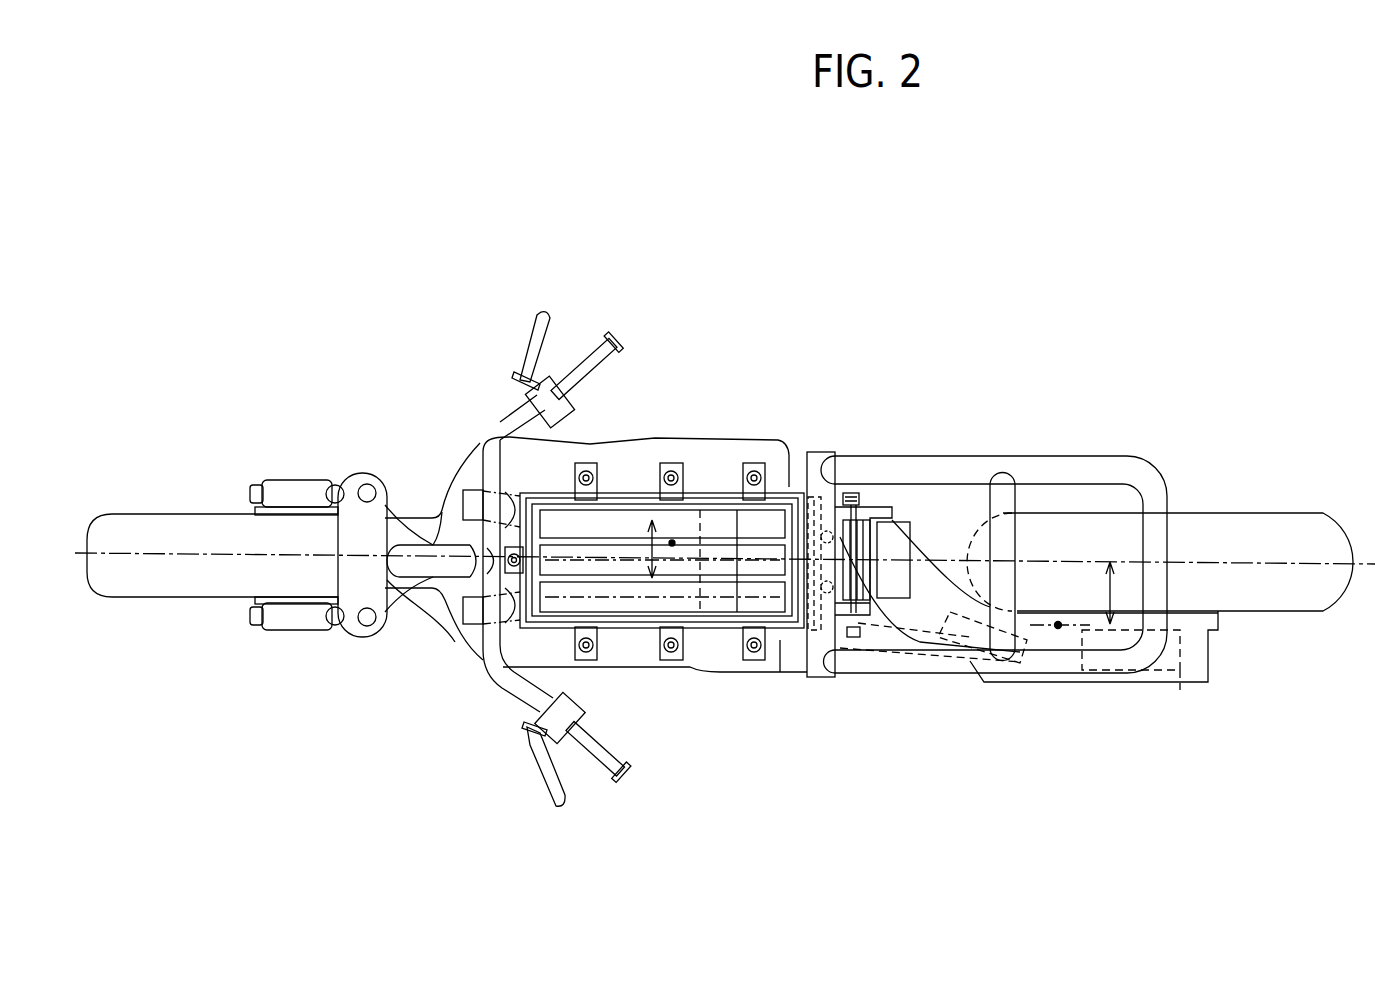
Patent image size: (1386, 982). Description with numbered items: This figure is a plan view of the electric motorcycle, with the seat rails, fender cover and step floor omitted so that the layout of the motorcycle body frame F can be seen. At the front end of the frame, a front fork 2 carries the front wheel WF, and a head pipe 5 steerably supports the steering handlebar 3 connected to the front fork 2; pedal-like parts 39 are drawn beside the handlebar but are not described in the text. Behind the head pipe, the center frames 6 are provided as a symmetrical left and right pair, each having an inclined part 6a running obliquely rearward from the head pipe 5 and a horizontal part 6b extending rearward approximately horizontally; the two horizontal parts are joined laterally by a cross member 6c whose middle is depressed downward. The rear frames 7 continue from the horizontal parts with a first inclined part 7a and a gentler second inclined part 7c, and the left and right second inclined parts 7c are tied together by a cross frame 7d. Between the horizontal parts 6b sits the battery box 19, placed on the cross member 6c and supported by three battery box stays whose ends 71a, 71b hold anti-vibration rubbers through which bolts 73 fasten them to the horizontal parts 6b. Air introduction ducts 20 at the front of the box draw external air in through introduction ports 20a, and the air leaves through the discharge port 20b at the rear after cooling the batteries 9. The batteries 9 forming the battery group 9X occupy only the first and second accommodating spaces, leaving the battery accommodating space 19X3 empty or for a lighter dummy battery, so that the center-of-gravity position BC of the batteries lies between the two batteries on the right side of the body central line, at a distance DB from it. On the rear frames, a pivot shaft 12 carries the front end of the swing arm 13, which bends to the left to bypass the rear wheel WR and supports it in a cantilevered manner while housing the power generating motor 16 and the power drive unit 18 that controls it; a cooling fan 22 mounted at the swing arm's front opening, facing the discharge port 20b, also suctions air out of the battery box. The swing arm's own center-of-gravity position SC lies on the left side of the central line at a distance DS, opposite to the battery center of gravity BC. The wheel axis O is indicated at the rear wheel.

The front wheel WF is at (187, 528).
The rear wheel WR is at (1265, 522).
The front fork 2 is at (303, 492).
The head pipe 5 is at (432, 548).
The center frame 6 is at (473, 658).
The inclined part 6a is at (450, 590).
The horizontal part 6b is at (690, 458).
The cross member 6c is at (722, 600).
The air introduction duct 20 is at (512, 520).
The introduction port 20a is at (468, 498).
The discharge port 20b is at (852, 492).
The steering handlebar 3 is at (615, 332).
The pedal 39 is at (548, 310).
The battery 9 is at (603, 522).
The battery group 9X is at (830, 237).
The battery box 19 is at (615, 622).
The battery accommodating space 19X3 is at (768, 660).
The distance DB is at (652, 518).
The end of battery box stay 71a is at (578, 654).
The end of battery box stay 71b is at (675, 470).
The bolt 73 is at (680, 478).
The rear frame 7 is at (976, 460).
The first inclined part 7a is at (804, 460).
The second inclined part 7c is at (898, 454).
The cross frame 7d is at (1010, 500).
The pivot shaft 12 is at (884, 615).
The swing arm 13 is at (1182, 684).
The power generating motor 16 is at (1180, 648).
The power drive unit 18 is at (1030, 675).
The cooling fan 22 is at (895, 580).
The center-of-gravity position of swing arm SC is at (1058, 625).
The distance DS is at (1110, 593).
The center-of-gravity position of batteries BC is at (703, 628).
The motorcycle body frame F is at (456, 672).
The wheel axis O is at (1372, 562).